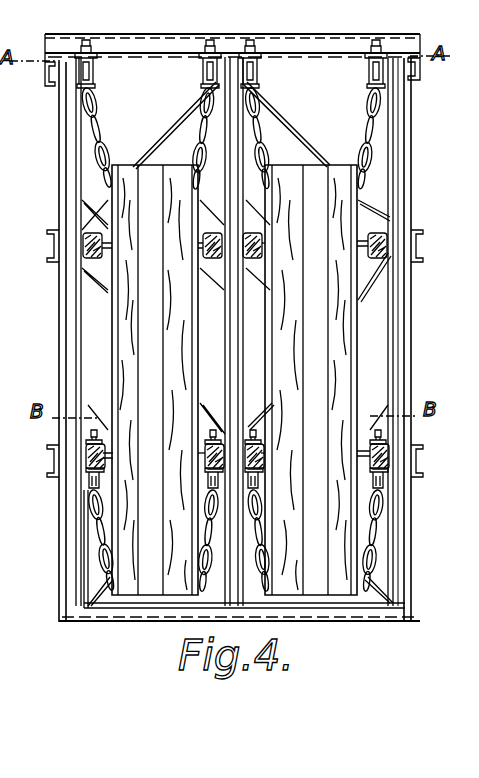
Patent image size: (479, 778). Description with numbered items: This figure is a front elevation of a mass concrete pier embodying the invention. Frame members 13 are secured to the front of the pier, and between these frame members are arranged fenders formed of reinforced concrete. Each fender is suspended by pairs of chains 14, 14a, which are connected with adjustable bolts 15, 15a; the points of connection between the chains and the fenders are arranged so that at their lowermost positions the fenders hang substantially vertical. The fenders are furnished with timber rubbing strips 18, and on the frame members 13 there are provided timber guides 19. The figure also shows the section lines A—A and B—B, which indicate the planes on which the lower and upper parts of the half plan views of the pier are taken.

The frame members 13 is at (402, 352).
The chains 14 is at (205, 105).
The chains 14a is at (100, 537).
The adjustable bolts 15 is at (89, 44).
The adjustable bolts 15a is at (88, 441).
The timber rubbing strips 18 is at (182, 298).
The timber guides 19 is at (384, 456).